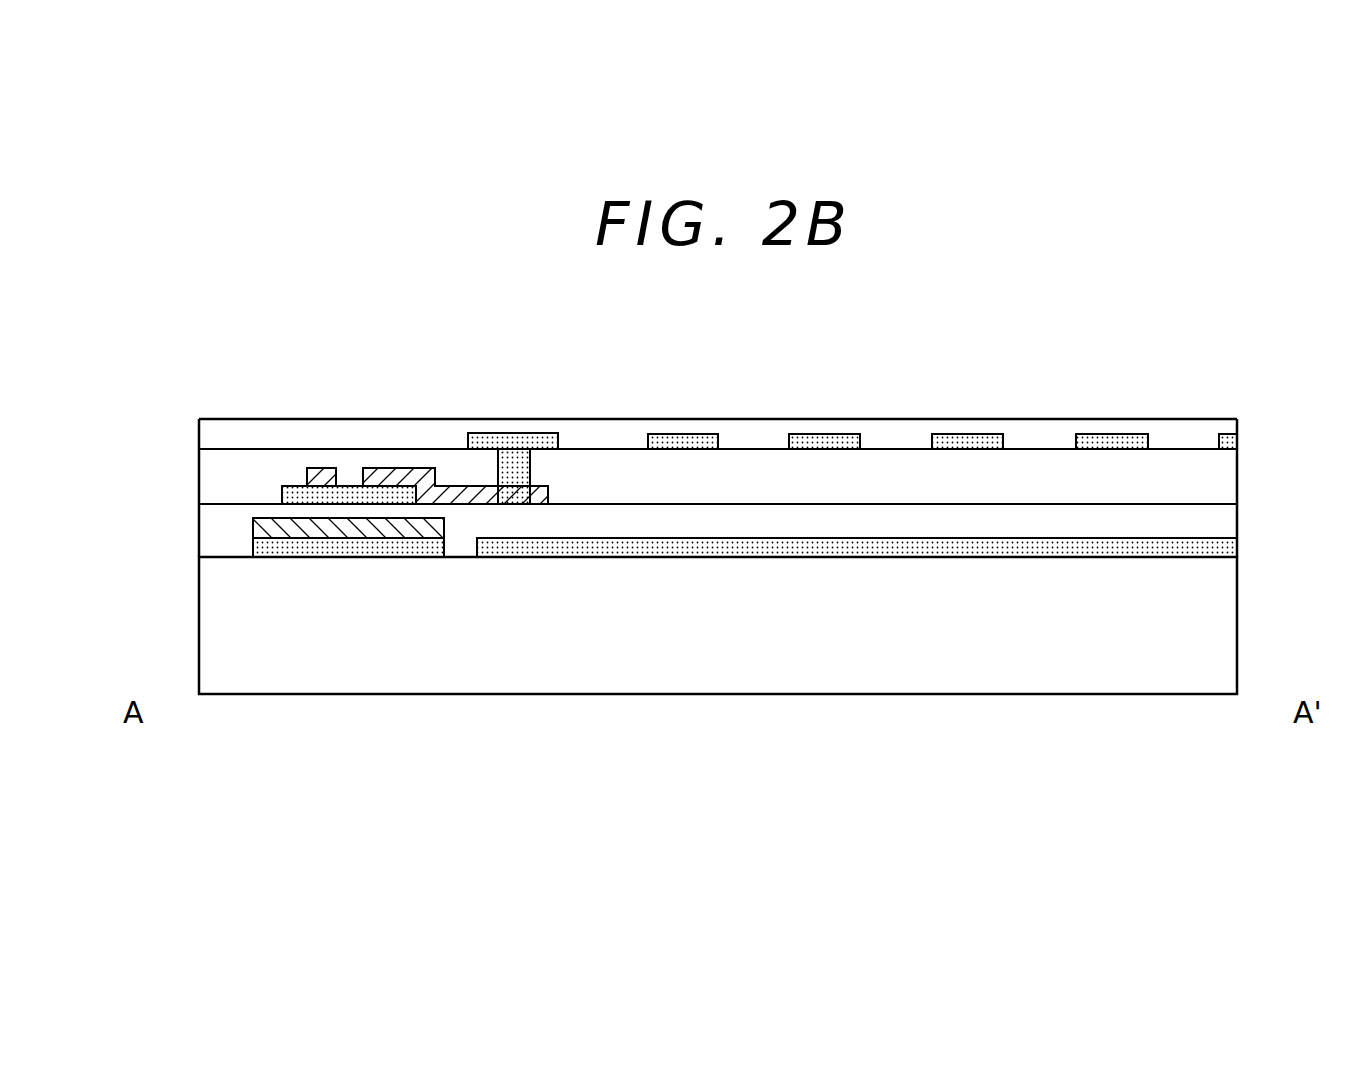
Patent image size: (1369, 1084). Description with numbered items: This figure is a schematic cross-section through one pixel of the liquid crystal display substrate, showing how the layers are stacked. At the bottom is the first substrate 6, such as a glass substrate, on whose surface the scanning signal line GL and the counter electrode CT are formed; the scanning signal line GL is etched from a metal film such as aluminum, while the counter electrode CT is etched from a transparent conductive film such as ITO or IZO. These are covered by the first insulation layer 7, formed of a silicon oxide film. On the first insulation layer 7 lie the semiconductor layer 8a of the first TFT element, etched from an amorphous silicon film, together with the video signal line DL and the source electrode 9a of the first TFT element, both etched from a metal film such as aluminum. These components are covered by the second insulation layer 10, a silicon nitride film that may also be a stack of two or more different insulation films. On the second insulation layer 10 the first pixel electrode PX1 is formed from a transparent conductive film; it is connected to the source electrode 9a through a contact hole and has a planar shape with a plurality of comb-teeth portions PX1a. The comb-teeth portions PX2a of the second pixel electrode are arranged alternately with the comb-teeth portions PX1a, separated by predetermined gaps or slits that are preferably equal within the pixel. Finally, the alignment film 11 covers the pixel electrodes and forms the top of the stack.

The first substrate 6 is at (579, 633).
The first insulation layer 7 is at (1188, 520).
The second insulation layer 10 is at (1205, 480).
The alignment film 11 is at (236, 428).
The first pixel electrode PX1 is at (527, 433).
The comb-teeth portions PX1a is at (689, 433).
The comb-teeth portions PX2a is at (830, 433).
The semiconductor layer 8a is at (283, 494).
The source electrode 9a is at (428, 468).
The video signal line DL is at (326, 468).
The scanning signal line GL is at (253, 527).
The counter electrode CT is at (776, 557).